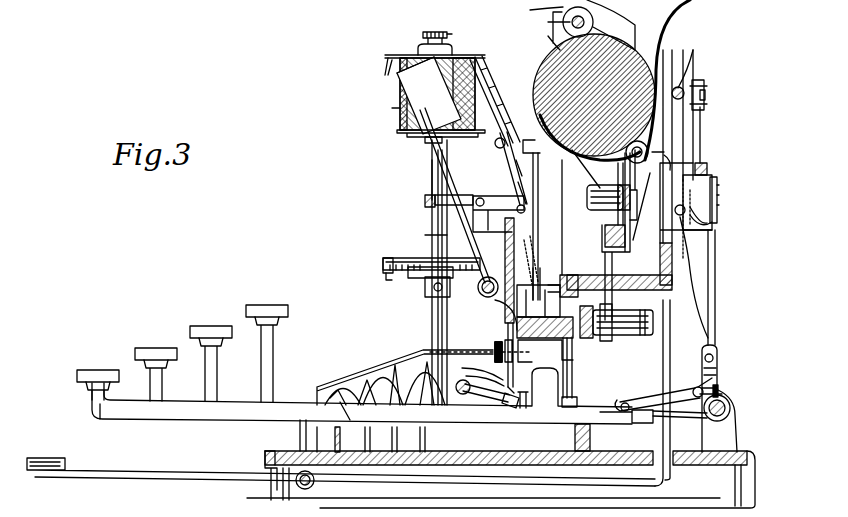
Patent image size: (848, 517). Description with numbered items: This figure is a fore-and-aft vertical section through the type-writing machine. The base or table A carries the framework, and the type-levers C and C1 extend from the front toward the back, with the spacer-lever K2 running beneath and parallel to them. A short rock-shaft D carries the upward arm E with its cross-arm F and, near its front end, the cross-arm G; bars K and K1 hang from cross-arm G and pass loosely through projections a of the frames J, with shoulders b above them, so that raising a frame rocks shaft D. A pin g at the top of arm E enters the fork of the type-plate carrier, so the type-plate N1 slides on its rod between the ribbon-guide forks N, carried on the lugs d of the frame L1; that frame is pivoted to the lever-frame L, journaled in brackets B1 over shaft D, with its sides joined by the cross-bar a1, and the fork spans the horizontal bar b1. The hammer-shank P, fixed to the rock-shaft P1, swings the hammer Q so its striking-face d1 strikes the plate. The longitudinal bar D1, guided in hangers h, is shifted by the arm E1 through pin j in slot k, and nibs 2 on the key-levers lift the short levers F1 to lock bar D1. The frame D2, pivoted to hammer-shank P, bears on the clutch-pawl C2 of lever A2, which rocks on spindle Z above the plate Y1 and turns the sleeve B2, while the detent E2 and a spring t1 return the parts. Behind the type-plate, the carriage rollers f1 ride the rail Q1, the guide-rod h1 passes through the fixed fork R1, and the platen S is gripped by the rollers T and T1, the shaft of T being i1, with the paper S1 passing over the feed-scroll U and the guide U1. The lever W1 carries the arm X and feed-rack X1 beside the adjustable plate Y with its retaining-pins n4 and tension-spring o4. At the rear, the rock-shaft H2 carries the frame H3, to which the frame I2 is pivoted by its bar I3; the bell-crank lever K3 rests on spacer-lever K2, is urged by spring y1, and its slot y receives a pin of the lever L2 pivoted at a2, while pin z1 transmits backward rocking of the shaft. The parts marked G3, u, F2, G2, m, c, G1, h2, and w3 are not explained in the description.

The base or table A is at (496, 478).
The spacer-lever K2 is at (150, 474).
The type-lever C1 is at (102, 418).
The type-lever C is at (162, 385).
The locking-lever F1 is at (405, 401).
The nib 2 is at (496, 404).
The slot k is at (523, 393).
The lateral pin j is at (589, 271).
The longitudinal bar D1 is at (479, 370).
The hangers h is at (504, 372).
The spindle Z is at (432, 338).
The hammer-shank P is at (432, 168).
The plate Y1 is at (428, 298).
The clutch-detent E2 is at (431, 257).
The rectangular frame D2 is at (383, 259).
The clutch-pawl C2 is at (386, 280).
The lever A2 is at (415, 278).
The supporting-sleeve B2 is at (432, 234).
The cross-bar a1 is at (425, 200).
The hammer Q is at (435, 96).
The striking-face d1 is at (415, 73).
The cap G3 is at (418, 54).
The knob u is at (450, 35).
The flange F2 is at (382, 67).
The casing G2 is at (388, 107).
The ribbon-guide forks N is at (486, 84).
The type-plate N1 is at (499, 108).
The lugs d is at (494, 145).
The pin g is at (531, 139).
The feed-scroll U is at (546, 226).
The lever-frame L is at (462, 200).
The rock-shaft P1 is at (486, 298).
The type-plate frame L1 is at (506, 175).
The brackets B1 is at (500, 232).
The horizontal bar b1 is at (525, 193).
The tension-spring t1 is at (524, 167).
The arm E is at (516, 218).
The block m is at (548, 306).
The rod c is at (536, 259).
The cross-arm F is at (544, 272).
The cross-arm G is at (570, 280).
The pin G1 is at (559, 281).
The arm E1 is at (499, 344).
The rock-shaft D is at (492, 308).
The bar K is at (558, 348).
The frame J is at (570, 352).
The shoulder b is at (574, 378).
The forward projection a is at (576, 399).
The rail Q1 is at (605, 238).
The rollers f1 is at (604, 185).
The roller shaft i1 is at (645, 170).
The platen S is at (640, 62).
The final guide U1 is at (626, 80).
The frictional roller T is at (584, 22).
The paper S1 is at (615, 25).
The frictional roller T1 is at (642, 143).
The bar K1 is at (537, 9).
The arm X is at (700, 112).
The fixed vertical fork R1 is at (693, 58).
The guide-rod h1 is at (683, 90).
The lever W1 is at (706, 90).
The carriage feed-rack X1 is at (707, 170).
The adjustable plate Y is at (714, 206).
The plate h2 is at (718, 186).
The pivot a2 is at (714, 226).
The retaining-pins n4 is at (714, 218).
The tension-spring o4 is at (700, 240).
The lever L2 is at (716, 272).
The bracket w3 is at (719, 352).
The slot y is at (719, 365).
The coil tension-spring y1 is at (720, 388).
The pin z1 is at (726, 396).
The rock-shaft H2 is at (731, 410).
The rectangular frame I2 is at (660, 398).
The rear bar I3 is at (696, 387).
The rectangular frame H3 is at (692, 418).
The bell-crank lever K3 is at (719, 420).